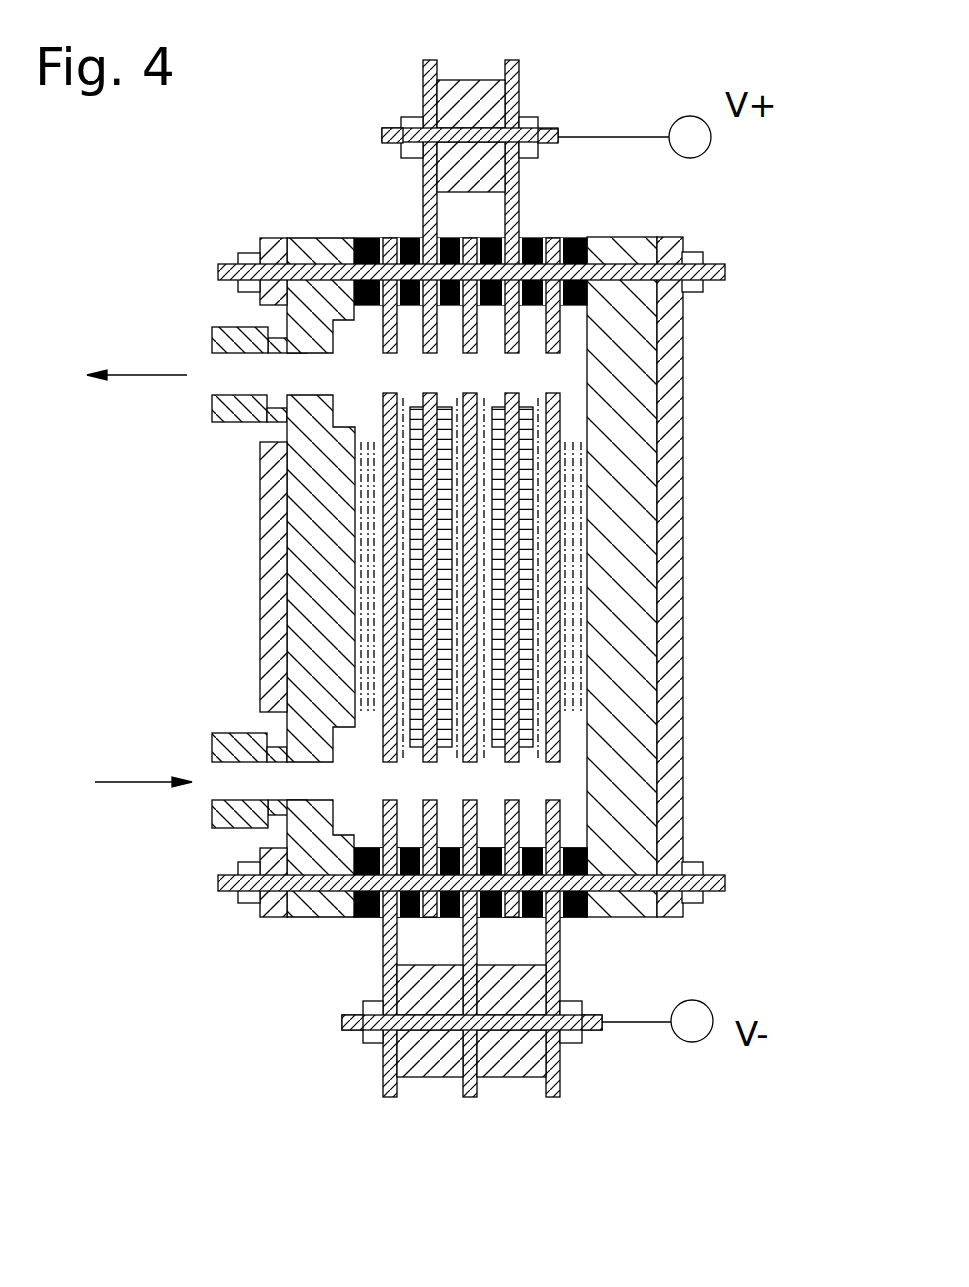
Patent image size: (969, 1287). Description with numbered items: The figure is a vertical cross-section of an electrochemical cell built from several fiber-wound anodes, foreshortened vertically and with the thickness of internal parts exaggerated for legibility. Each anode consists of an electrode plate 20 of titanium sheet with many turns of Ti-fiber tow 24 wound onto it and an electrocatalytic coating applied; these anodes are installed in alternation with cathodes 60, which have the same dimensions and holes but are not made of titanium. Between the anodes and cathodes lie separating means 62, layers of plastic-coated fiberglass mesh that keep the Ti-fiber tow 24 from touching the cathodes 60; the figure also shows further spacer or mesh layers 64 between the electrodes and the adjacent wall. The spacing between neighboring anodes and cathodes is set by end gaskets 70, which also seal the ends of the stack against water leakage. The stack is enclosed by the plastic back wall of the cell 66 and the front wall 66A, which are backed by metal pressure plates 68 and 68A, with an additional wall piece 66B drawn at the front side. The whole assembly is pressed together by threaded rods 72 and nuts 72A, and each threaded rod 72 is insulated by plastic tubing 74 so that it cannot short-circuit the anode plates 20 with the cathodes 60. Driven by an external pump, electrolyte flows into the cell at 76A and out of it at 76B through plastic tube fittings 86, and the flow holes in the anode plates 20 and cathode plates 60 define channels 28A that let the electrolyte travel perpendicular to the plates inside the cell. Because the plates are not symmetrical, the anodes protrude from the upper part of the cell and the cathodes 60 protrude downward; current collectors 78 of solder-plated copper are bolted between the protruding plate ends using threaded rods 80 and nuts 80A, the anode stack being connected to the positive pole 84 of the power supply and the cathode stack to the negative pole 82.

The electrode plate 20 is at (518, 71).
The Ti-fiber tow 24 is at (523, 447).
The channels 28A is at (402, 368).
The cathodes 60 is at (560, 735).
The separating means 62 is at (540, 507).
The membrane 64 is at (573, 560).
The back wall of the cell 66 is at (623, 667).
The front wall 66A is at (317, 545).
The side block flange 66B is at (287, 463).
The metal pressure plate 68 is at (670, 730).
The metal pressure plate 68A is at (275, 627).
The end gaskets 70 is at (575, 918).
The threaded rods 72 is at (218, 880).
The nuts 72A is at (237, 900).
The plastic tubing 74 is at (307, 907).
The electrolyte inflow 76A is at (143, 782).
The electrolyte outflow 76B is at (153, 373).
The current collectors 78 is at (485, 170).
The threaded rods 80 is at (382, 142).
The nuts 80A is at (398, 152).
The negative pole 82 is at (700, 1005).
The positive pole 84 is at (697, 142).
The plastic tube fittings 86 is at (213, 747).